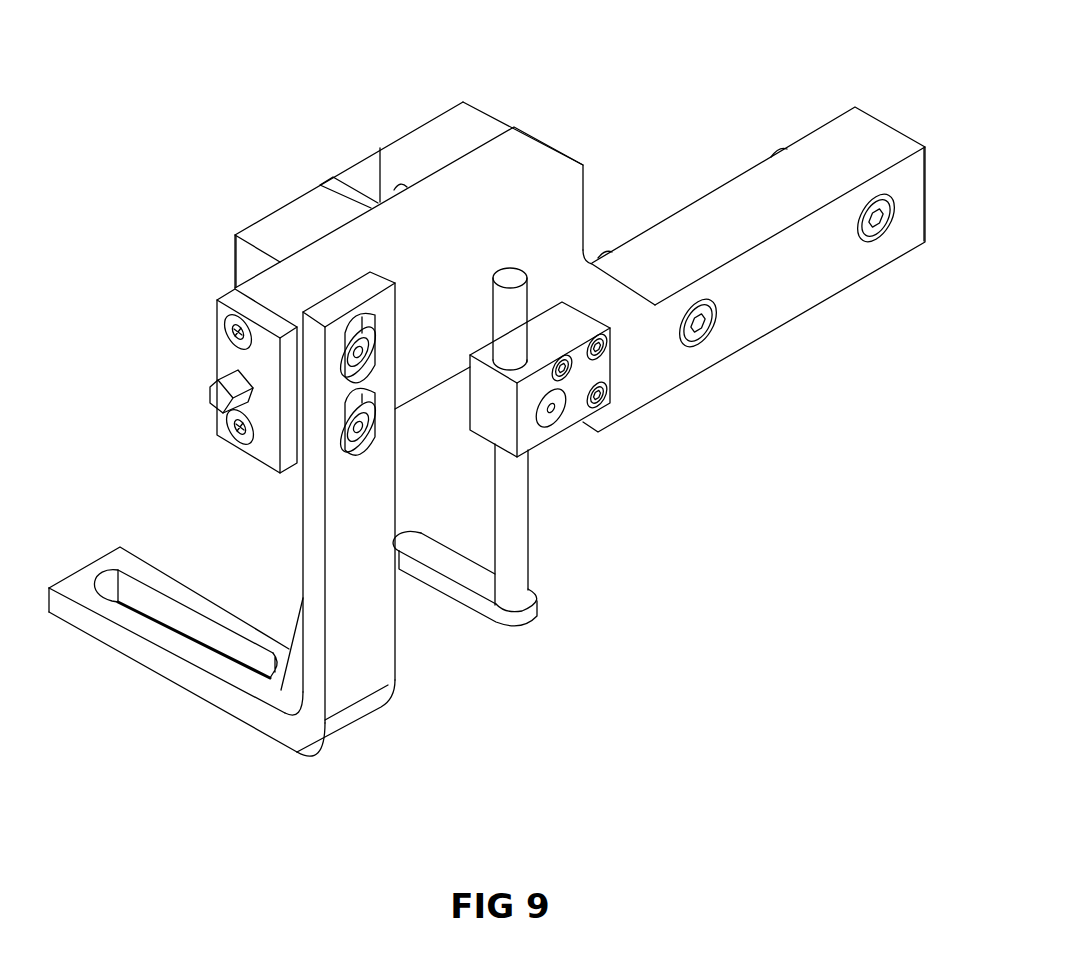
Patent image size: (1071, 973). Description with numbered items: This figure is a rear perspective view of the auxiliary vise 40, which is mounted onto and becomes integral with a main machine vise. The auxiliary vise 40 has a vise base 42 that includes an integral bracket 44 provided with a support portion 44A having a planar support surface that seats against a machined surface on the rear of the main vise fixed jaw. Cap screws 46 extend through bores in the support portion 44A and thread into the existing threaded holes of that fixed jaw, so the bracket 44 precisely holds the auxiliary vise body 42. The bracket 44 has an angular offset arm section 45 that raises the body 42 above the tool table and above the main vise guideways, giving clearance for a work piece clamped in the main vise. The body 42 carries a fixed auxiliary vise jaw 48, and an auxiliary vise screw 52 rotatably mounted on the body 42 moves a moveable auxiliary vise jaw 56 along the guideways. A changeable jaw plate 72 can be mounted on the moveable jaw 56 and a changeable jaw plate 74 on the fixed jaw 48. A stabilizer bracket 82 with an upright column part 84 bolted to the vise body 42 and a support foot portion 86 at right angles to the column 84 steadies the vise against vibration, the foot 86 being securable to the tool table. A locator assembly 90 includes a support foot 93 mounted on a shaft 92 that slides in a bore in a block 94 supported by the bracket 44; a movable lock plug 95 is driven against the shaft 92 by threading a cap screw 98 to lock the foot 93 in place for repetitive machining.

The auxiliary vise 40 is at (558, 142).
The vise base 42 is at (535, 223).
The bracket 44 is at (722, 182).
The support portion 44A is at (903, 225).
The angular offset arm section 45 is at (605, 307).
The cap screws 46 is at (700, 307).
The fixed auxiliary vise jaw 48 is at (433, 135).
The auxiliary vise screw 52 is at (213, 392).
The moveable auxiliary vise jaw 56 is at (275, 223).
The changeable jaw plate 72 is at (345, 178).
The changeable jaw plate 74 is at (377, 160).
The stabilizer bracket 82 is at (293, 588).
The upright column part 84 is at (338, 545).
The support foot portion 86 is at (157, 660).
The locator assembly 90 is at (482, 626).
The shaft 92 is at (513, 558).
The support foot 93 is at (428, 577).
The block 94 is at (488, 425).
The movable lock plug 95 is at (557, 424).
The cap screw 98 is at (541, 403).